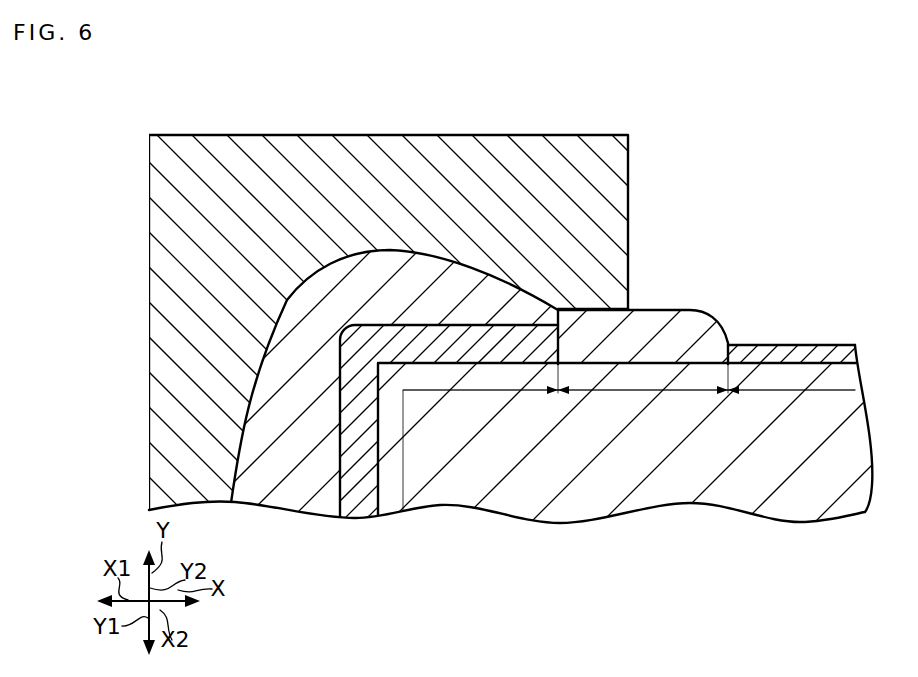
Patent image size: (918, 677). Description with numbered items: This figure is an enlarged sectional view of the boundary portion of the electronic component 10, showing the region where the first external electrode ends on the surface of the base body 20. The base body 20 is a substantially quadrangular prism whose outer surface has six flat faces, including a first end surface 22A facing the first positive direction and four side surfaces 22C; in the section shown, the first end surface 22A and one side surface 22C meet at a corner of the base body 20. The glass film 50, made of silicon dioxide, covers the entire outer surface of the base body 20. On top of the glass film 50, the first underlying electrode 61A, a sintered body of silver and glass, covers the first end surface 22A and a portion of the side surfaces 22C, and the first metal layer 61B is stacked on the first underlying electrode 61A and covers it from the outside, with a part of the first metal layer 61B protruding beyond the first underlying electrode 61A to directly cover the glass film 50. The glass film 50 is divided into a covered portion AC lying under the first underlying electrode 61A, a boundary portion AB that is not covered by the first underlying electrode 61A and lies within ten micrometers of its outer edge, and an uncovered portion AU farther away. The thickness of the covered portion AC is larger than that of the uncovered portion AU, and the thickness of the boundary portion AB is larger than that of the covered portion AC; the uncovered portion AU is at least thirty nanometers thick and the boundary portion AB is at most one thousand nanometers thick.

The electronic component 10 is at (459, 328).
The base body 20 is at (603, 508).
The first end surface 22A is at (375, 490).
The side surfaces 22C is at (803, 357).
The glass film 50 is at (688, 318).
The first underlying electrode 61A is at (284, 495).
The first metal layer 61B is at (355, 148).
The covered portion AC is at (468, 392).
The boundary portion AB is at (647, 392).
The uncovered portion AU is at (787, 392).